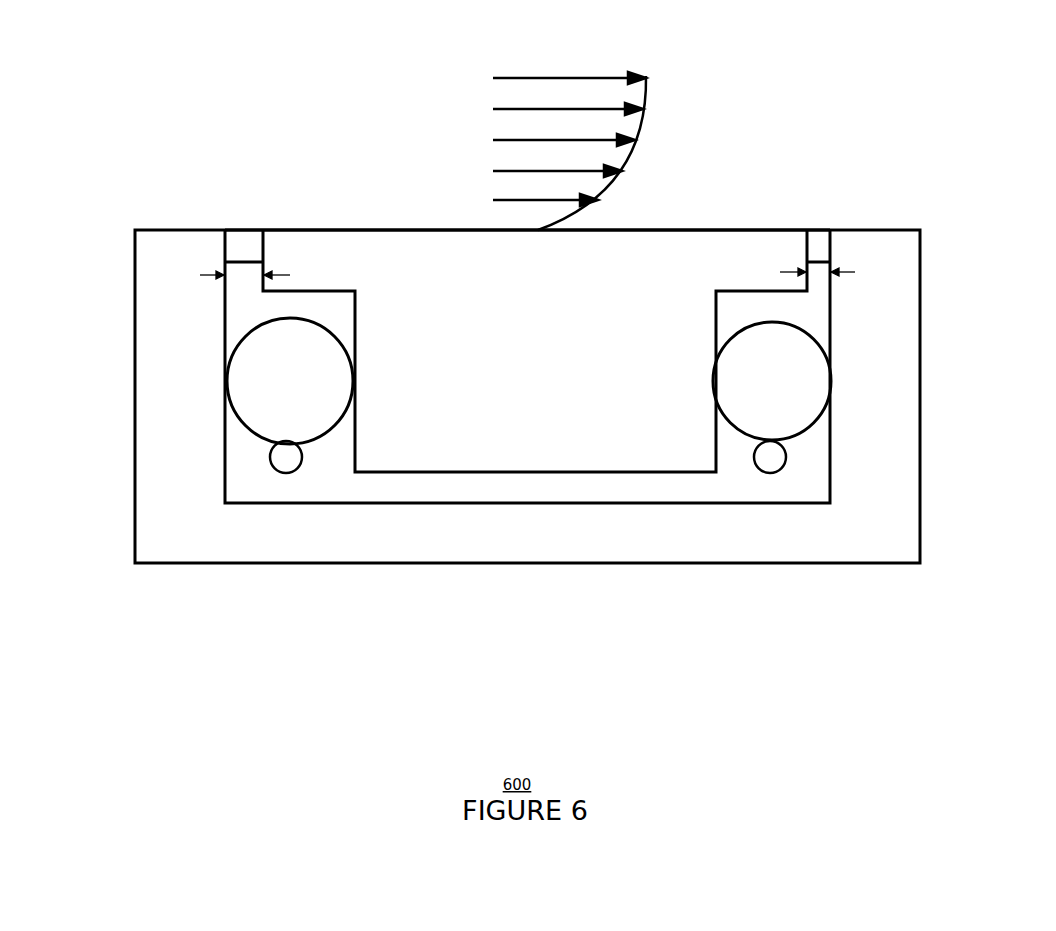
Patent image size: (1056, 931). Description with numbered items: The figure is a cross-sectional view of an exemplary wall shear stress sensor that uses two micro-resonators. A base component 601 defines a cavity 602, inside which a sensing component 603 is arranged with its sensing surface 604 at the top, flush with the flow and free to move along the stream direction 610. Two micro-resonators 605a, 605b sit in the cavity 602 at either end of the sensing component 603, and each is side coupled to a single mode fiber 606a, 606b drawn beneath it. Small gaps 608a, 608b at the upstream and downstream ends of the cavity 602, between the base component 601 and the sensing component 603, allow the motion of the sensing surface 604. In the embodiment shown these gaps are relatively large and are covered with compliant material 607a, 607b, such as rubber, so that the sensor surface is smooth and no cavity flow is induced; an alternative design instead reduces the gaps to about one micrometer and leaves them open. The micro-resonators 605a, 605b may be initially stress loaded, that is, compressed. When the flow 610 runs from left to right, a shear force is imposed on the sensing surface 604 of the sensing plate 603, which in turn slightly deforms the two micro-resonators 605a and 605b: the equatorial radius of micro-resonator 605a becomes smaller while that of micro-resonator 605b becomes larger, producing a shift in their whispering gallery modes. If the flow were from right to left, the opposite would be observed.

The base component 601 is at (880, 381).
The cavity 602 is at (257, 472).
The sensing component 603 is at (543, 442).
The sensing surface 604 is at (393, 228).
The micro-resonator 605a is at (286, 412).
The micro-resonator 605b is at (770, 411).
The single mode fiber 606a is at (286, 473).
The single mode fiber 606b is at (769, 473).
The compliant material 607a is at (243, 246).
The compliant material 607b is at (818, 246).
The gap 608a is at (206, 273).
The gap 608b is at (843, 270).
The stream direction 610 is at (643, 109).